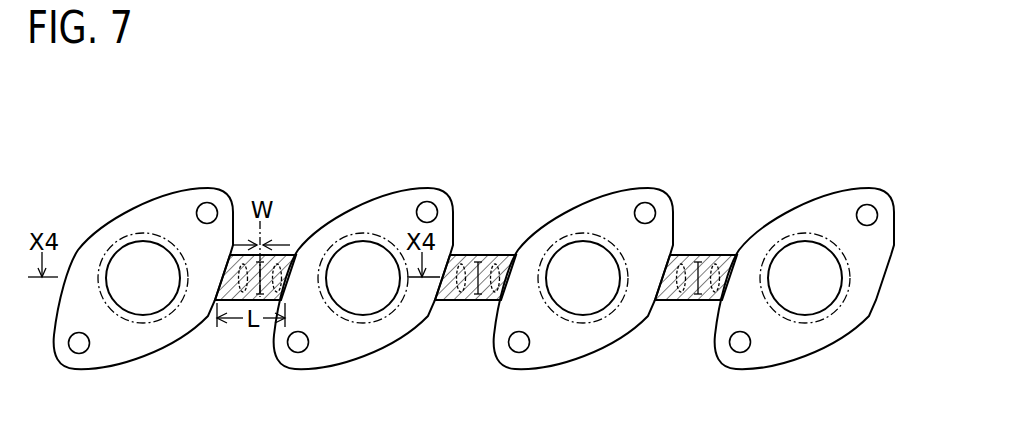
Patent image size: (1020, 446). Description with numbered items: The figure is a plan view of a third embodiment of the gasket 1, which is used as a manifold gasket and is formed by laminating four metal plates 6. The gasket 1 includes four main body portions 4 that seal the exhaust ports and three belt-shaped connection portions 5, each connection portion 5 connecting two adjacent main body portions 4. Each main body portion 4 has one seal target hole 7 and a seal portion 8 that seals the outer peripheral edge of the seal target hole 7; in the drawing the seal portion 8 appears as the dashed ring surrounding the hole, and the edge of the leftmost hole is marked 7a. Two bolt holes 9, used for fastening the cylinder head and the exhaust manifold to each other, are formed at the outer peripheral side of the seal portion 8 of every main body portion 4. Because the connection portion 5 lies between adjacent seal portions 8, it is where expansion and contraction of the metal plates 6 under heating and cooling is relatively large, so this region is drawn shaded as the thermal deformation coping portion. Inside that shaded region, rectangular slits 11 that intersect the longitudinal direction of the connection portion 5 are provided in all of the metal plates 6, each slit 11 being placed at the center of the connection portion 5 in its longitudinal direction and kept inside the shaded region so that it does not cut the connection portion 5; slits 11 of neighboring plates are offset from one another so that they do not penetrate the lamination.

The gasket 1 is at (703, 138).
The main body portion 4 is at (137, 218).
The connection portion 5 is at (684, 301).
The metal plate 6 is at (585, 346).
The seal target hole 7 is at (810, 315).
The opening edge 7a is at (143, 315).
The seal portion 8 is at (348, 320).
The bolt hole 9 is at (207, 203).
The slit 11 is at (465, 253).